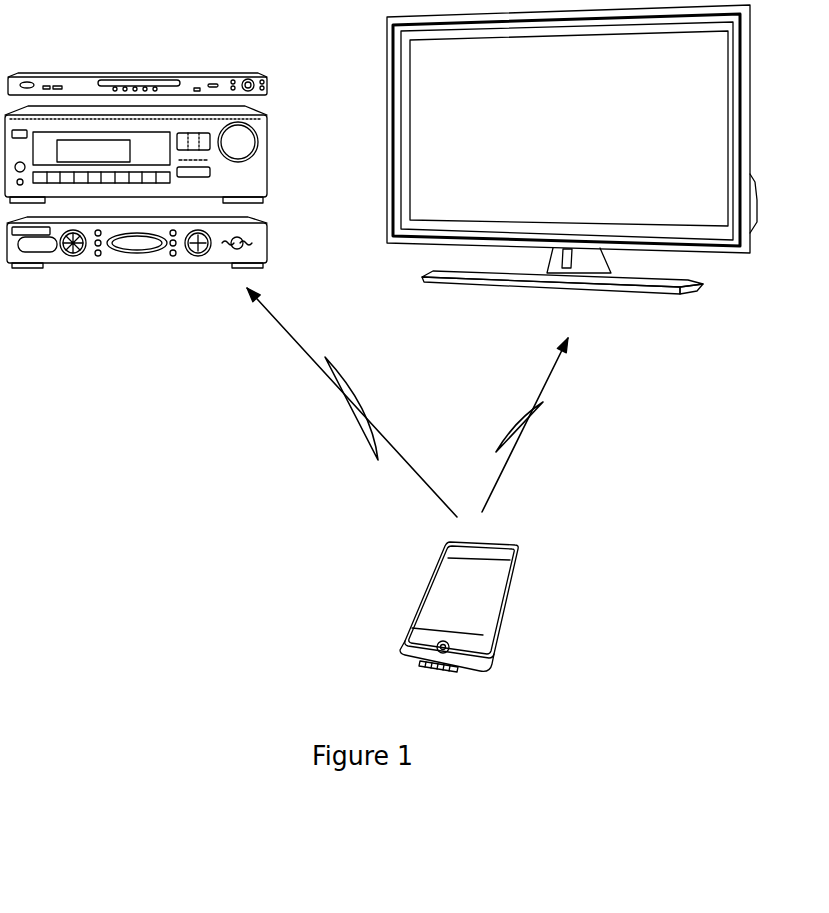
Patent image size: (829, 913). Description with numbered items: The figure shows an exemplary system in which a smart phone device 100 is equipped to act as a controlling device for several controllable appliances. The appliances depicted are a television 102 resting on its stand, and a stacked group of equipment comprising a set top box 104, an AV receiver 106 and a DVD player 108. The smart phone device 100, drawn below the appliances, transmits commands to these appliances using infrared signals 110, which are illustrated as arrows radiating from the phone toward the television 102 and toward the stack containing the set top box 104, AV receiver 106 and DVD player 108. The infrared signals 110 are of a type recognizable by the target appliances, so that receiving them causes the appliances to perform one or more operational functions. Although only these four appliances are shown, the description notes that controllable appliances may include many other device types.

The smart phone device 100 is at (518, 577).
The television 102 is at (727, 256).
The set top box 104 is at (265, 222).
The AV receiver 106 is at (265, 112).
The DVD player 108 is at (265, 73).
The infrared signals 110 is at (312, 368).